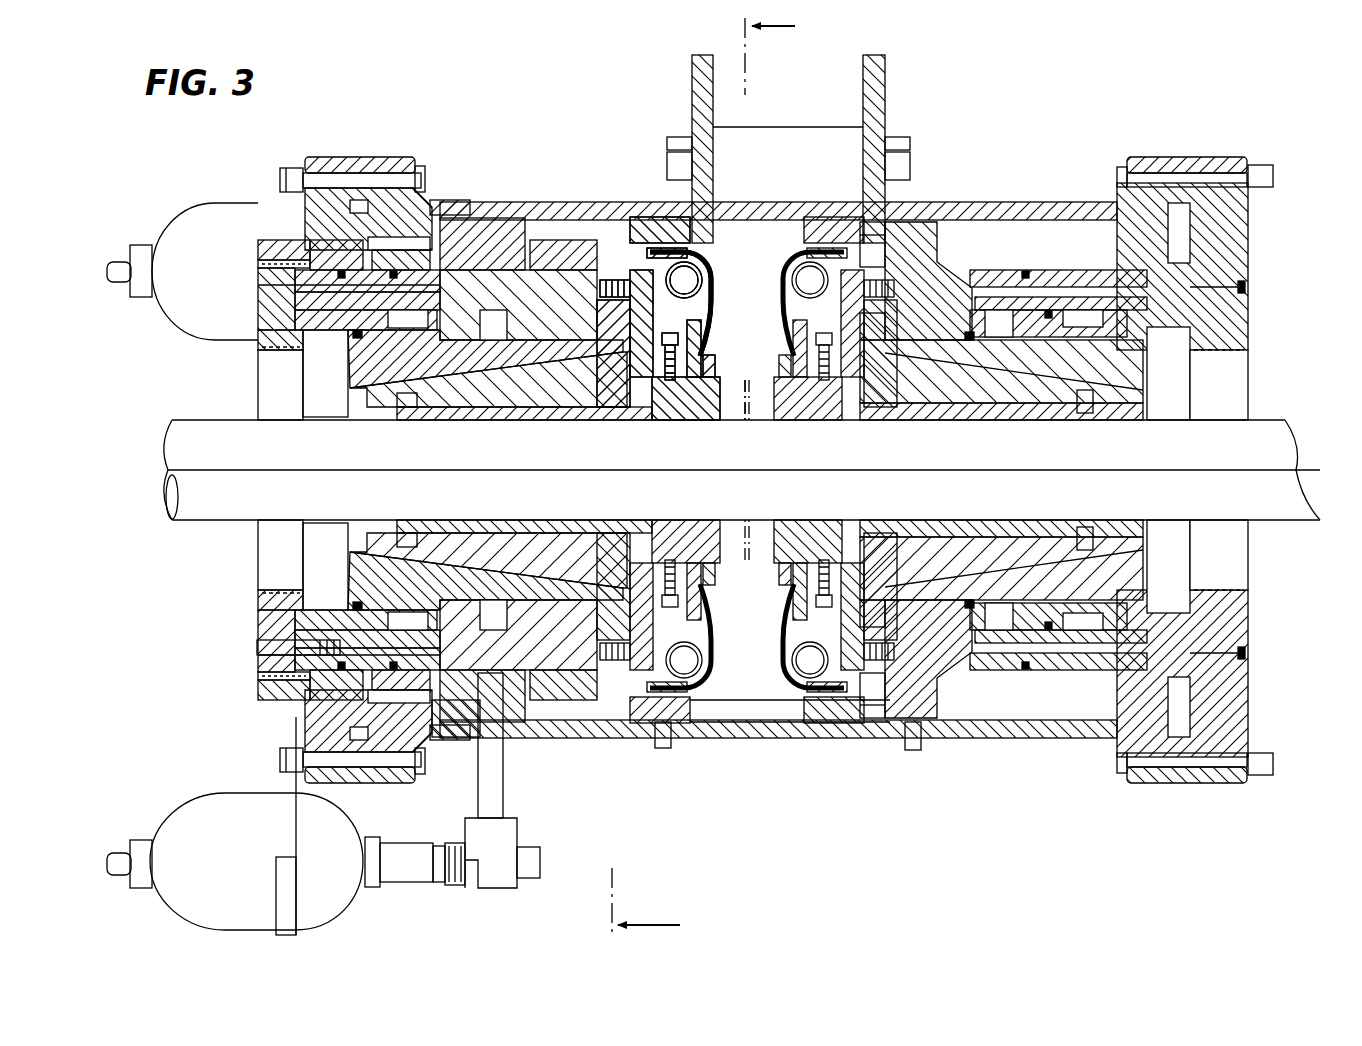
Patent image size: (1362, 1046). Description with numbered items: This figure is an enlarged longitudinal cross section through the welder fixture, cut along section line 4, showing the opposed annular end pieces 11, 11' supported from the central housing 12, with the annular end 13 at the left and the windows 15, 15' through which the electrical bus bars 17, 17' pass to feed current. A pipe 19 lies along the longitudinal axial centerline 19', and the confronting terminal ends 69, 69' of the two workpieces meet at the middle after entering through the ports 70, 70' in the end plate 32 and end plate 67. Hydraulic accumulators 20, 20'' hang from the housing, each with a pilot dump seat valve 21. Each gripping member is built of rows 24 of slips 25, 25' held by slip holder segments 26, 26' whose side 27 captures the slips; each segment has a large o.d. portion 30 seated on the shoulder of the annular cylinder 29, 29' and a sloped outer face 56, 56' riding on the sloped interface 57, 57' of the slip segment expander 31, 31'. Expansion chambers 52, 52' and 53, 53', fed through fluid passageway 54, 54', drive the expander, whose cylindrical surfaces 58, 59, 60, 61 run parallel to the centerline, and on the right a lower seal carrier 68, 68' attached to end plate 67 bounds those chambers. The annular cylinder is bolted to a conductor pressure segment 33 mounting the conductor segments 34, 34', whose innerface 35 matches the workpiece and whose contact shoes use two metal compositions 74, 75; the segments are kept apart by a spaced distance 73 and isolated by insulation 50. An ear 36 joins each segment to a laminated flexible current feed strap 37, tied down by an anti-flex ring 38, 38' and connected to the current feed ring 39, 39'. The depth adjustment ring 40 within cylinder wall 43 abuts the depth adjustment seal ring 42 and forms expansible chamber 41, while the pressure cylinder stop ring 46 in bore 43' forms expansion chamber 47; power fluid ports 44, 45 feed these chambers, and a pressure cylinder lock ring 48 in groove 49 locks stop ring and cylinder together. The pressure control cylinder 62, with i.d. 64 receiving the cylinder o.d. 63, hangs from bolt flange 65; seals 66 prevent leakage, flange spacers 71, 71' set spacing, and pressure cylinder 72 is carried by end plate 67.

The section line 4- 4 is at (755, 477).
The annular end piece 11 is at (1255, 127).
The annular end piece 11' is at (251, 133).
The central housing 12 is at (967, 200).
The annular end 13 is at (252, 248).
The window 15 is at (790, 747).
The window 15' is at (804, 184).
The electrical bus bar 17 is at (649, 64).
The electrical bus bar 17' is at (927, 72).
The pipe 19 is at (720, 407).
The longitudinal axial centerline 19' is at (732, 502).
The hydraulic accumulator 20 is at (133, 793).
The hydraulic accumulator 20'' is at (136, 198).
The pilot dump seat valve 21 is at (520, 835).
The row of slip inserts 24 is at (495, 426).
The slip 25 is at (527, 440).
The rotor ring 25' is at (950, 499).
The slip holder segment 26 is at (614, 486).
The rotor body 26' is at (1021, 552).
The side of the segment 27 is at (592, 421).
The annular cylinder 29 is at (541, 470).
The piston 29' is at (607, 702).
The large o.d. portion 30 is at (614, 662).
The slip segment expander 31 is at (431, 468).
The slip expander 31' is at (1188, 478).
The annular end plate 32 is at (258, 318).
The conductor pressure segment 33 is at (666, 605).
The conductor segment 34 is at (650, 496).
The conductor segment 34' is at (826, 496).
The innerface 35 is at (630, 570).
The ear 36 is at (718, 600).
The laminated flexible electrical current feed strap 37 is at (715, 640).
The anti-flex ring 38 is at (735, 444).
The hydraulic line 38' is at (760, 469).
The current feed ring 39 is at (686, 448).
The nut 39' is at (858, 749).
The depth adjustment ring 40 is at (265, 263).
The expansible chamber 41 is at (392, 245).
The depth adjustment seal ring 42 is at (280, 245).
The cylinder wall 43 is at (292, 224).
The bore 43' is at (530, 179).
The power fluid port 44 is at (447, 218).
The power fluid port 45 is at (463, 210).
The pressure cylinder stop ring 46 is at (540, 245).
The expansion chamber 47 is at (483, 225).
The pressure cylinder lock ring 48 is at (548, 245).
The groove 49 is at (605, 280).
The insulation 50 is at (620, 535).
The expansion chamber 52 is at (536, 447).
The expansible chamber 52' is at (1032, 467).
The expansion chamber 53 is at (371, 466).
The expansible chamber 53' is at (1104, 467).
The fluid passageway 54 is at (218, 288).
The bolt 54' is at (1288, 269).
The sloped outer face 56 is at (327, 549).
The passage 56' is at (1164, 588).
The sloped interface 57 is at (405, 474).
The port 57' is at (1119, 534).
The cylindrical surface 58 is at (385, 600).
The cylindrical surface 59 is at (530, 560).
The cylindrical surface 60 is at (435, 540).
The cylindrical surface 61 is at (555, 570).
The pressure control cylinder 62 is at (425, 745).
The o.d. of the annular cylinder 63 is at (503, 760).
The i.d. of the pressure control cylinder 64 is at (490, 600).
The bolt flange 65 is at (296, 722).
The seal 66 is at (370, 630).
The end plate 67 is at (1248, 228).
The bearing sleeve 68 is at (256, 372).
The lower seal carrier 68' is at (1204, 371).
The terminal end 69 is at (722, 484).
The terminal end 69' is at (773, 484).
The port 70 is at (223, 568).
The port 70' is at (1286, 368).
The flange spacer 71 is at (382, 799).
The flange spacer 71' is at (1214, 799).
The pressure cylinder 72 is at (940, 262).
The spaced distance 73 is at (722, 437).
The metal composition 74 is at (688, 520).
The metal composition 75 is at (735, 515).